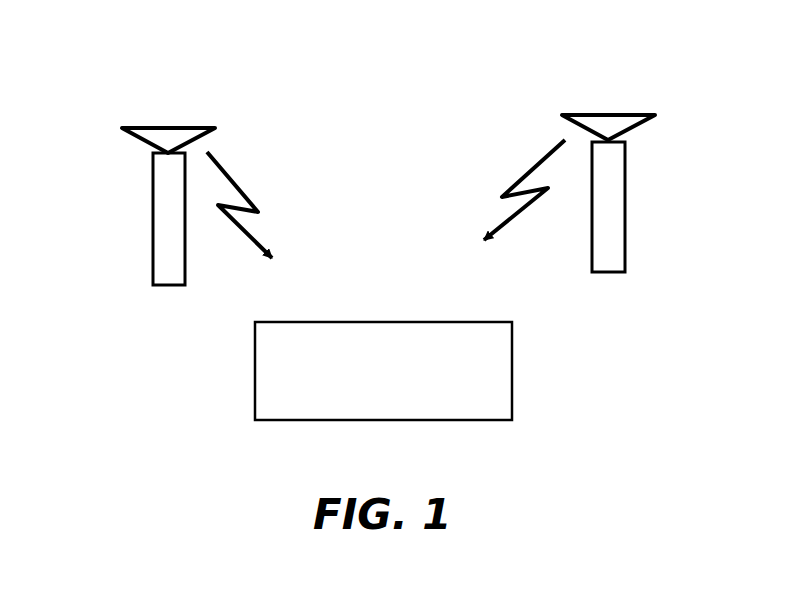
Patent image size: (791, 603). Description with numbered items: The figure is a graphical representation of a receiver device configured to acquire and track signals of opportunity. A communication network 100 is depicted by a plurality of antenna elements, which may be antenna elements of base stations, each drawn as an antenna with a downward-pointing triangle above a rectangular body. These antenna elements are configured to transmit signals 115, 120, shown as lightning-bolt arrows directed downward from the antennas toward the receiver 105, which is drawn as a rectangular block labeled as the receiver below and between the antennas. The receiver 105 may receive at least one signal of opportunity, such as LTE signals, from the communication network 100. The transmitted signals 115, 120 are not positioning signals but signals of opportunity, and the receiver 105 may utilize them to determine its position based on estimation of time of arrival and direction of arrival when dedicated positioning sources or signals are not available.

The communication network 100 is at (100, 64).
The transmitted signal 115 is at (234, 182).
The transmitted signal 120 is at (543, 153).
The receiver 105 is at (253, 370).